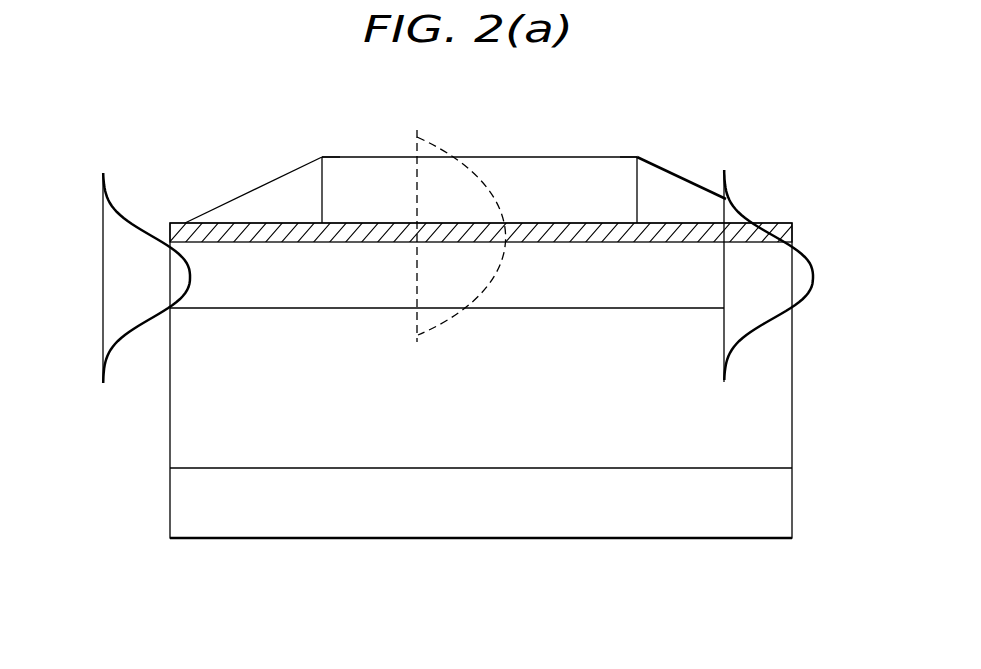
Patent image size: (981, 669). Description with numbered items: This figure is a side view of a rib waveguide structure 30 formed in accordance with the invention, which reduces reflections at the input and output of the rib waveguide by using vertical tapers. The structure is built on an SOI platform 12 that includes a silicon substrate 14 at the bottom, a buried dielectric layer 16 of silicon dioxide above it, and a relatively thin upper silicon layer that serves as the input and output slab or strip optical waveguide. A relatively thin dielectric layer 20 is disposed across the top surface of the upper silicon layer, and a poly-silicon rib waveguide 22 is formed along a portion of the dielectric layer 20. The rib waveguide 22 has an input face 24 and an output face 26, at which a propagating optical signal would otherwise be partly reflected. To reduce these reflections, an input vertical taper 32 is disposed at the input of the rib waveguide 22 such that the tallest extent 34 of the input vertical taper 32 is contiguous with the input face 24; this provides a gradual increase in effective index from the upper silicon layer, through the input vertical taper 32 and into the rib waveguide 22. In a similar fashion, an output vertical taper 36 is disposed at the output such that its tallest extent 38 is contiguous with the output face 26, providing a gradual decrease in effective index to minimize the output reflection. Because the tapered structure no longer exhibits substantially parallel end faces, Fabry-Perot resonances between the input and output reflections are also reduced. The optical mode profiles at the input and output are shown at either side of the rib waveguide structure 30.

The SOI platform 12 is at (845, 389).
The silicon substrate 14 is at (185, 504).
The buried dielectric layer 16 is at (185, 438).
The dielectric layer 20 is at (182, 229).
The rib waveguide 22 is at (463, 161).
The input face 24 is at (323, 182).
The output face 26 is at (637, 178).
The rib waveguide structure 30 is at (85, 408).
The input vertical taper 32 is at (275, 193).
The tallest extent of input vertical taper 34 is at (322, 157).
The output vertical taper 36 is at (683, 192).
The tallest extent of output vertical taper 38 is at (637, 157).